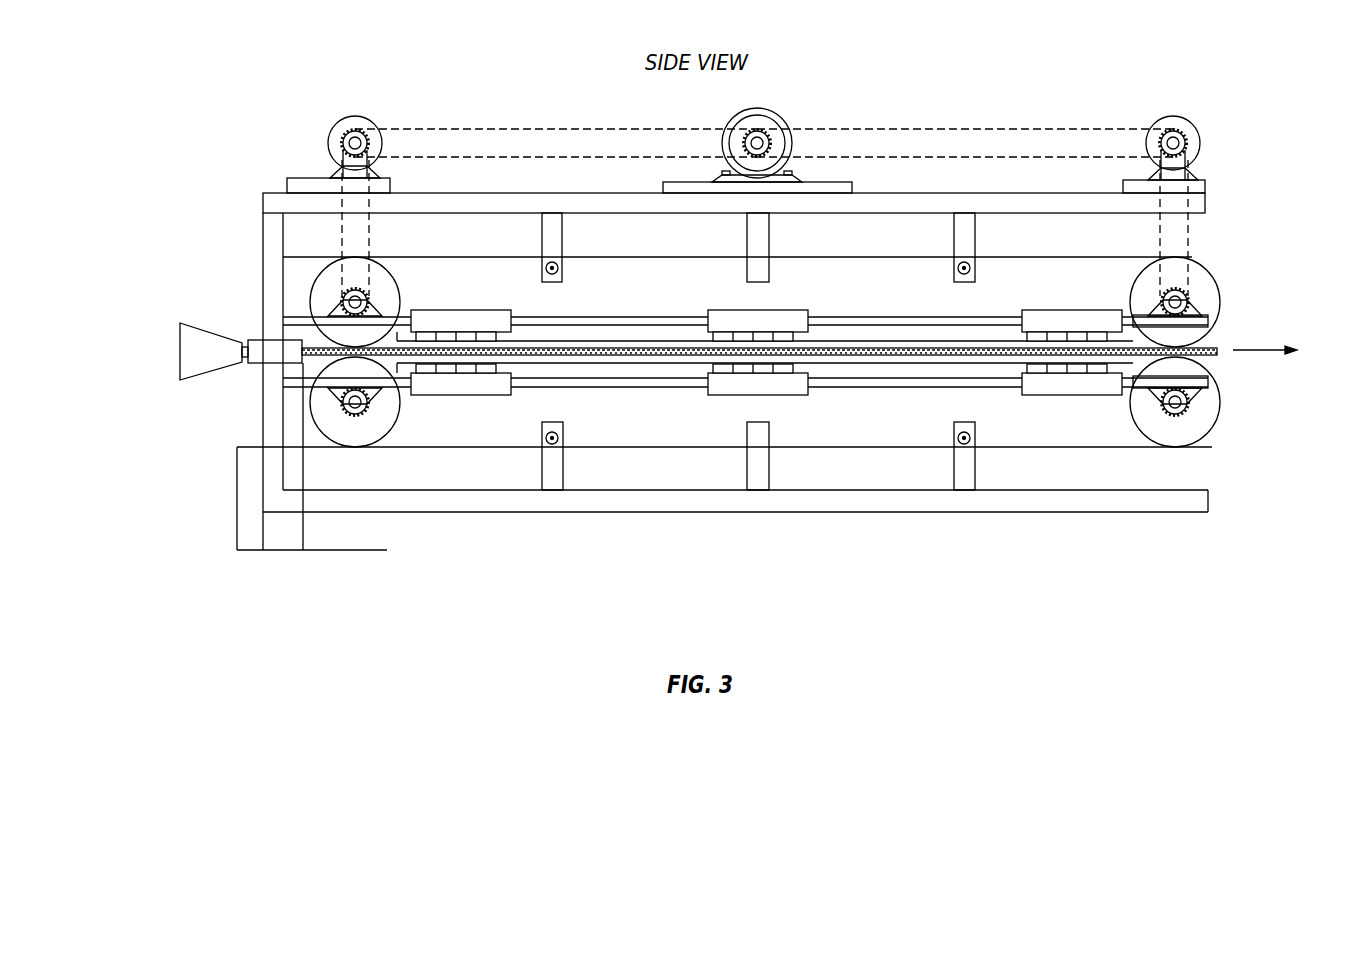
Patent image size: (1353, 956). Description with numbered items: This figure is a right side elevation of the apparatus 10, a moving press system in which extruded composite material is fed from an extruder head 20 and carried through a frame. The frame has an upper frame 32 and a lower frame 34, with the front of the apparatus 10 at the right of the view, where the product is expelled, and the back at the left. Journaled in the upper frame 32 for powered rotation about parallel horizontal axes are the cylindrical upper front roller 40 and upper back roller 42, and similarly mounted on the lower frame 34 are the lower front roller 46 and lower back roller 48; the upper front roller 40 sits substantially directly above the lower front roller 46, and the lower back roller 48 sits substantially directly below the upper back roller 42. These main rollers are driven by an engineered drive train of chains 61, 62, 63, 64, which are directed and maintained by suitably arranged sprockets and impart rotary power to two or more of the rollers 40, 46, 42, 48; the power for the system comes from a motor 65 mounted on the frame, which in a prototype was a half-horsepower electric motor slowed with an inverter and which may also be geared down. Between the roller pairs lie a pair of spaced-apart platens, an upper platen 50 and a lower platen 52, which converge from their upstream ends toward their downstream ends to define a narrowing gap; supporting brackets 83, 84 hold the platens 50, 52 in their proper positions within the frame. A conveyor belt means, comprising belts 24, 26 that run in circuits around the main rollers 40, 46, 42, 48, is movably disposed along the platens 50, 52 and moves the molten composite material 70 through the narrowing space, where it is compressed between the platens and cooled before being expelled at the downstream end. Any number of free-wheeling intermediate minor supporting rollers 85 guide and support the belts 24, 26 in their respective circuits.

The apparatus 10 is at (533, 579).
The extruder head 20 is at (232, 322).
The upper conveyor belt 24 is at (650, 257).
The lower conveyor belt 26 is at (690, 452).
The upper frame 32 is at (278, 191).
The lower frame 34 is at (1045, 512).
The upper front roller 40 is at (330, 273).
The upper back roller 42 is at (1205, 285).
The lower front roller 46 is at (355, 437).
The lower back roller 48 is at (1177, 437).
The upper platen 50 is at (900, 340).
The lower platen 52 is at (900, 362).
The chain 61 is at (493, 128).
The chain 62 is at (925, 128).
The chain 63 is at (370, 243).
The chain 64 is at (1192, 238).
The motor 65 is at (777, 122).
The molten composite material 70 is at (1227, 370).
The supporting bracket 83 is at (650, 316).
The supporting bracket 84 is at (637, 392).
The intermediate minor supporting rollers 85 is at (562, 268).